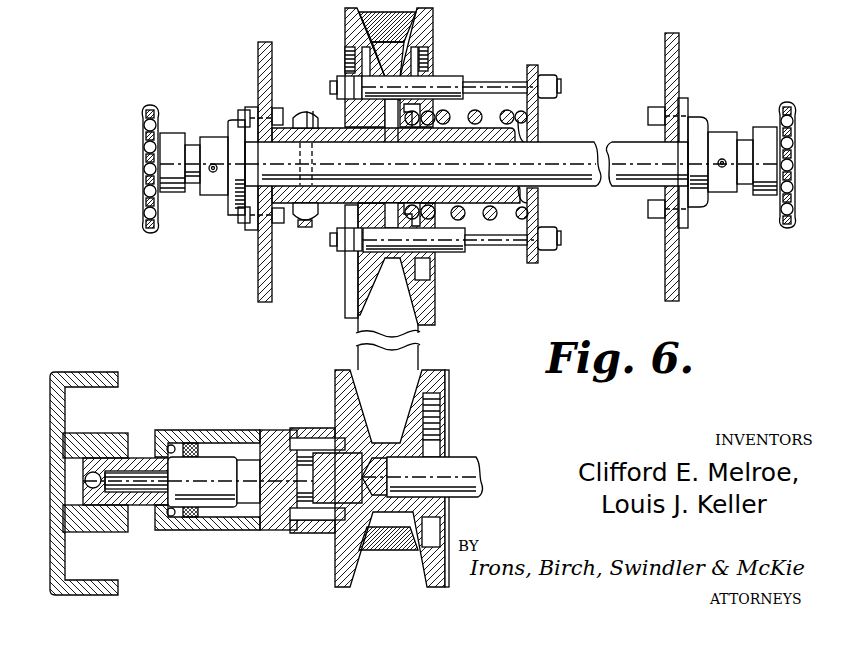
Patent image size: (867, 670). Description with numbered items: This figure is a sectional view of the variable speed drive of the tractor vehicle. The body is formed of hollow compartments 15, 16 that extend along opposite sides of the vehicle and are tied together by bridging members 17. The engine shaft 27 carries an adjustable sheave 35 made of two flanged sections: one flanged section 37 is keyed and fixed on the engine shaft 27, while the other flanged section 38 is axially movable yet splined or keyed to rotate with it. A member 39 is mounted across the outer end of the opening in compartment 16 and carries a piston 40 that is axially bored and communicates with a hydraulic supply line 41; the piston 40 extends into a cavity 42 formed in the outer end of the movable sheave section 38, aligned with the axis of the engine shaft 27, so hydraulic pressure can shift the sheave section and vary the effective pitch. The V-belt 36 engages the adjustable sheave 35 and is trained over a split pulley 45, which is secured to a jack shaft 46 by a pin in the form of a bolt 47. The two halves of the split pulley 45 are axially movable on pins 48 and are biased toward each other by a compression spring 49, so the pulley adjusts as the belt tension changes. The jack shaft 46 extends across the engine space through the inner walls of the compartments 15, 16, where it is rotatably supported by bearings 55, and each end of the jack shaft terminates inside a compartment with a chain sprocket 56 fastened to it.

The hollow compartment 15 is at (680, 56).
The hollow compartment 16 is at (259, 70).
The bridging member 17 is at (536, 0).
The engine shaft 27 is at (470, 460).
The adjustable sheave 35 is at (328, 389).
The V-belt 36 is at (372, 327).
The flanged section 37 is at (445, 386).
The flanged section 38 is at (336, 556).
The member 39 is at (70, 374).
The piston 40 is at (135, 455).
The hydraulic supply line 41 is at (96, 472).
The cavity 42 is at (250, 458).
The split pulley 45 is at (439, 21).
The jack shaft 46 is at (578, 152).
The bolt 47 is at (300, 112).
The pin 48 is at (446, 80).
The compression spring 49 is at (490, 222).
The bearing 55 is at (243, 132).
The chain sprocket 56 is at (146, 158).